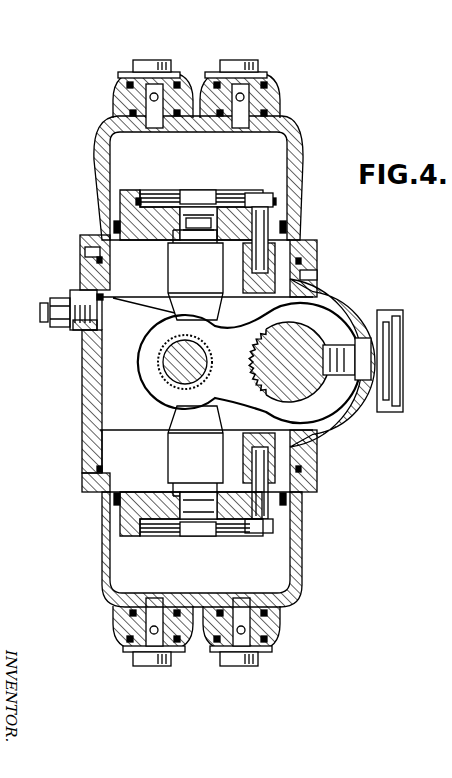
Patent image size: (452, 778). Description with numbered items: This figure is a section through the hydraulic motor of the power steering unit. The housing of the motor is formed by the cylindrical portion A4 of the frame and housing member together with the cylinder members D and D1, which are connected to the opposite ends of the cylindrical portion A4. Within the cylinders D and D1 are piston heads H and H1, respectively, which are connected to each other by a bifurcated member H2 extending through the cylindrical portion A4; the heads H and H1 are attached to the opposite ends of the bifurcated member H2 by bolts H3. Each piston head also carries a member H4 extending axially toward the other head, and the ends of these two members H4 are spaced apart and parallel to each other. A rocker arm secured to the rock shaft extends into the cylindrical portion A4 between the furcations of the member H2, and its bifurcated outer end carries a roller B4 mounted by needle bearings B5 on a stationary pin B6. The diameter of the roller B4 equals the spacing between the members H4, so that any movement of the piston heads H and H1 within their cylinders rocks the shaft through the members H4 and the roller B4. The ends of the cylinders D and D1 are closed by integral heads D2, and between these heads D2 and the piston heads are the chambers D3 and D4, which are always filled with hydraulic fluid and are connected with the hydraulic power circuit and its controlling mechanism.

The cylinder member D is at (100, 167).
The cylinder member D1 is at (102, 560).
The integral head D2 is at (290, 119).
The chamber D3 is at (219, 562).
The chamber D4 is at (232, 156).
The piston head H is at (125, 212).
The piston head H1 is at (130, 515).
The bifurcated member H2 is at (97, 297).
The bolt H3 is at (292, 238).
The member H4 is at (195, 363).
The cylindrical portion A4 is at (82, 428).
The roller B4 is at (140, 360).
The needle bearings B5 is at (212, 366).
The stationary pin B6 is at (185, 362).